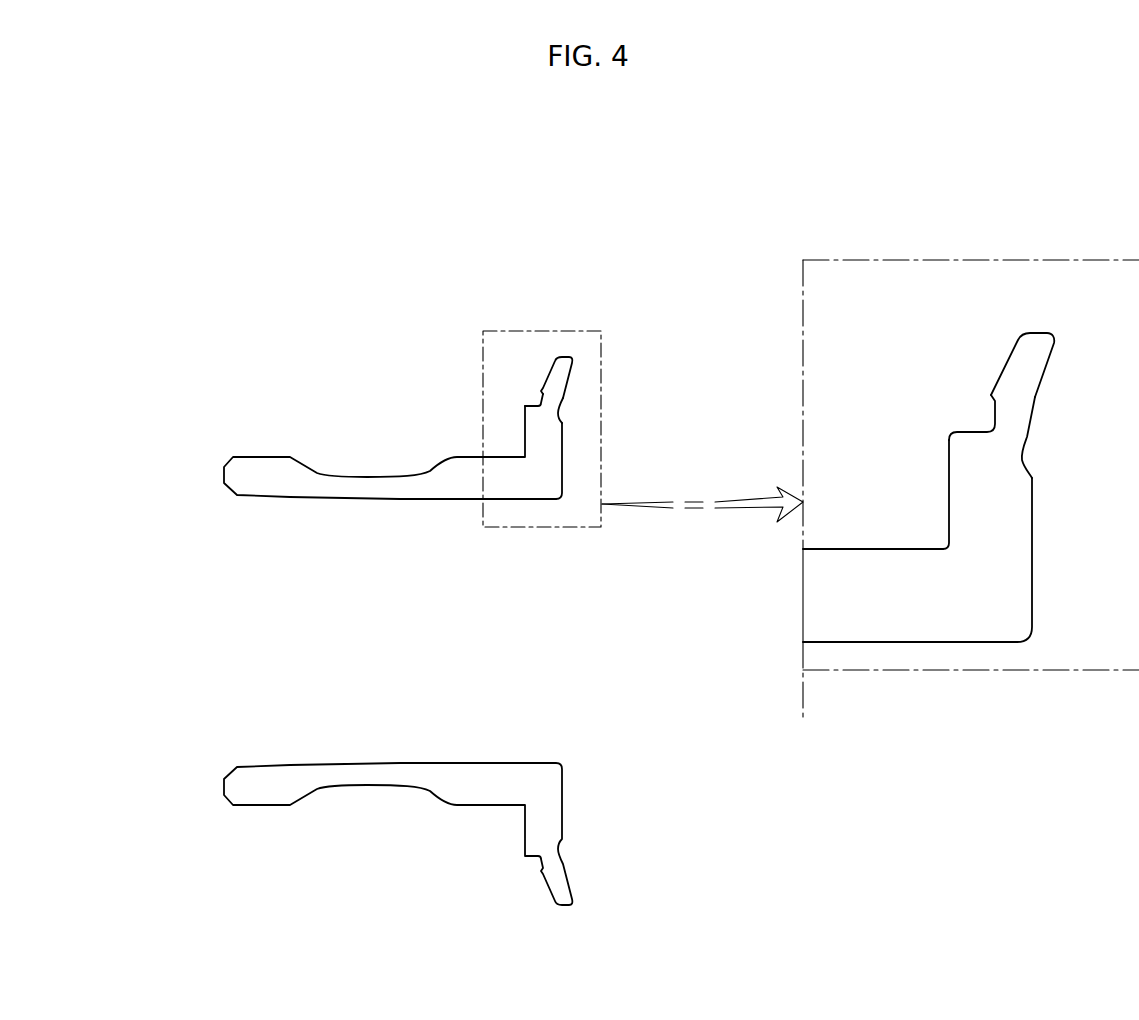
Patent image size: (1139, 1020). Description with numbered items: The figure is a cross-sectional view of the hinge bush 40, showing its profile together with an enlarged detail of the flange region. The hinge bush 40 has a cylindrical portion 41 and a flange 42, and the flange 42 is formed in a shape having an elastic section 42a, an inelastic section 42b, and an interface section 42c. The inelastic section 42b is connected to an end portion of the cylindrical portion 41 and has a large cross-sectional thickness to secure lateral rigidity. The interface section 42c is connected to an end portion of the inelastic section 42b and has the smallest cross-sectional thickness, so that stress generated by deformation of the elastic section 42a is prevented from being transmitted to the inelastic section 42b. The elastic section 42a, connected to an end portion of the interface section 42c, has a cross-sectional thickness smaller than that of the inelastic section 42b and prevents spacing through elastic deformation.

The hinge bush 40 is at (207, 476).
The cylindrical portion 41 is at (525, 406).
The flange 42 is at (573, 357).
The elastic section 42a is at (560, 375).
The inelastic section 42b is at (547, 438).
The interface section 42c is at (552, 399).